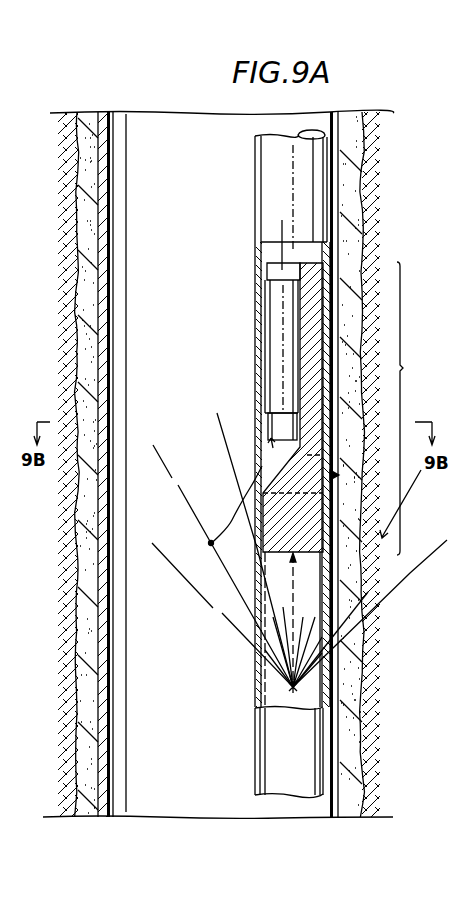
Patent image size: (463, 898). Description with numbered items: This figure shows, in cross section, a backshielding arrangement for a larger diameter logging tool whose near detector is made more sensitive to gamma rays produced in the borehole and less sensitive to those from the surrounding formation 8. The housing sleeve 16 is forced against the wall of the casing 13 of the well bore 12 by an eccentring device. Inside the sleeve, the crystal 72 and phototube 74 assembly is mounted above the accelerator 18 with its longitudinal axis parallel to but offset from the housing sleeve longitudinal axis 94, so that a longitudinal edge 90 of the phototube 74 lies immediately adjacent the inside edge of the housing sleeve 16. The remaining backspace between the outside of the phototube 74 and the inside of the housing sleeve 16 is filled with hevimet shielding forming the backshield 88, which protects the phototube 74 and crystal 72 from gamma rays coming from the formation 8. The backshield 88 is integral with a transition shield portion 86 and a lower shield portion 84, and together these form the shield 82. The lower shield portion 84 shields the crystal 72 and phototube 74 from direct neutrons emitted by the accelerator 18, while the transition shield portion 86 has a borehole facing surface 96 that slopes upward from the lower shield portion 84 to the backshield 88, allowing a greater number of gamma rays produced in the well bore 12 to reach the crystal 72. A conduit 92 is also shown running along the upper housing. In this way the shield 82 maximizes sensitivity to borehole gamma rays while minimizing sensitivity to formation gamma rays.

The formation 8 is at (398, 218).
The well bore 12 is at (143, 765).
The casing 13 is at (97, 250).
The housing sleeve 16 is at (255, 731).
The accelerator 18 is at (297, 689).
The crystal 72 is at (275, 425).
The phototube 74 is at (280, 342).
The shield 82 is at (415, 408).
The lower shield portion 84 is at (340, 583).
The transition shield portion 86 is at (338, 497).
The backshield 88 is at (267, 250).
The longitudinal edge of phototube 90 is at (265, 298).
The conduit 92 is at (278, 228).
The housing sleeve longitudinal axis 94 is at (293, 158).
The borehole facing surface 96 is at (262, 466).